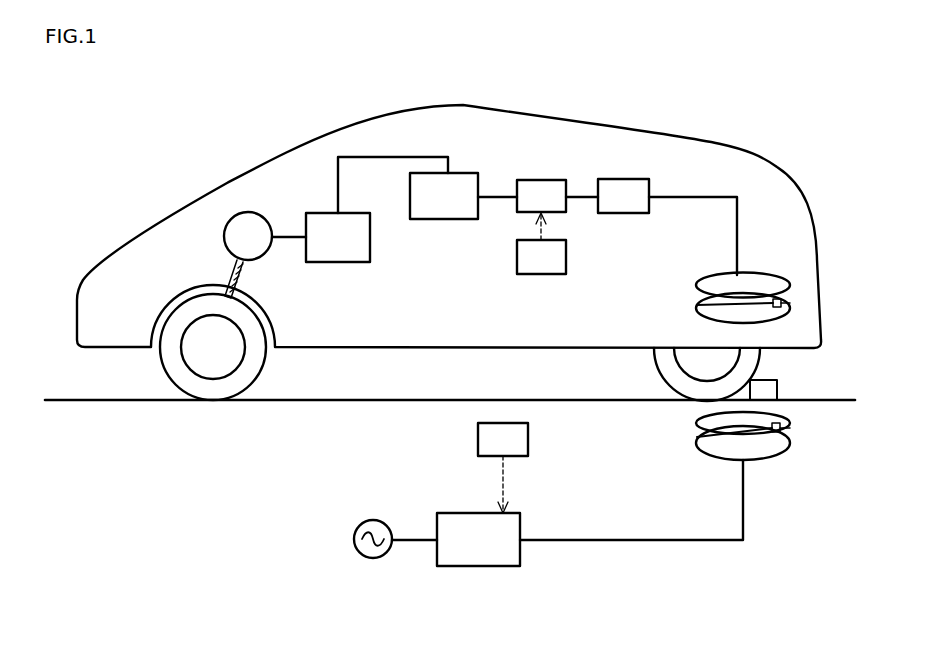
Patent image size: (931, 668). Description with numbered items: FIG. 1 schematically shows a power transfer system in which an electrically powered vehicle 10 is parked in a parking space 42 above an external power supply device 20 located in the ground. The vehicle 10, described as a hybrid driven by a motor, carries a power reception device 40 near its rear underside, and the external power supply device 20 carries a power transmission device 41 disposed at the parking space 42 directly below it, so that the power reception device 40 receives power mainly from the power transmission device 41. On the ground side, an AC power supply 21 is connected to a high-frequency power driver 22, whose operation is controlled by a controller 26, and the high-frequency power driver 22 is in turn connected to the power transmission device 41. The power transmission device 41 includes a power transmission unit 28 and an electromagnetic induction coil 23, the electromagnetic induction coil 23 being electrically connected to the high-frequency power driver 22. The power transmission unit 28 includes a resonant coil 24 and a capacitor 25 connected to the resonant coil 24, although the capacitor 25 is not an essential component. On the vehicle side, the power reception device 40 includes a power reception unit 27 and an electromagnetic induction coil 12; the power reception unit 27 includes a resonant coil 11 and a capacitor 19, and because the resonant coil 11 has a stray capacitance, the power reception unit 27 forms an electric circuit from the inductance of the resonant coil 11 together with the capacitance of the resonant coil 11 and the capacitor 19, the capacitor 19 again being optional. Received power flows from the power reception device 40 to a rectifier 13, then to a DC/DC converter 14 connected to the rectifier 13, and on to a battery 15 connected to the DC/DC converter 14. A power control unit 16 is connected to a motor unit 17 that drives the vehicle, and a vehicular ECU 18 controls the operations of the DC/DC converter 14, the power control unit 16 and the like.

The electrically powered vehicle 10 is at (540, 110).
The resonant coil 11 is at (706, 319).
The electromagnetic induction coil 12 is at (700, 276).
The rectifier 13 is at (624, 179).
The DC/DC converter 14 is at (541, 180).
The battery 15 is at (428, 219).
The power control unit 16 is at (317, 213).
The motor unit 17 is at (223, 236).
The vehicular ECU 18 is at (517, 257).
The capacitor 19 is at (700, 304).
The external power supply device 20 is at (556, 569).
The AC power supply 21 is at (373, 520).
The high-frequency power driver 22 is at (479, 513).
The electromagnetic induction coil 23 is at (708, 455).
The resonant coil 24 is at (700, 414).
The capacitor 25 is at (700, 439).
The controller 26 is at (478, 440).
The power reception unit 27 is at (692, 317).
The power transmission unit 28 is at (692, 432).
The power reception device 40 is at (674, 305).
The power transmission device 41 is at (675, 446).
The parking space 42 is at (300, 400).